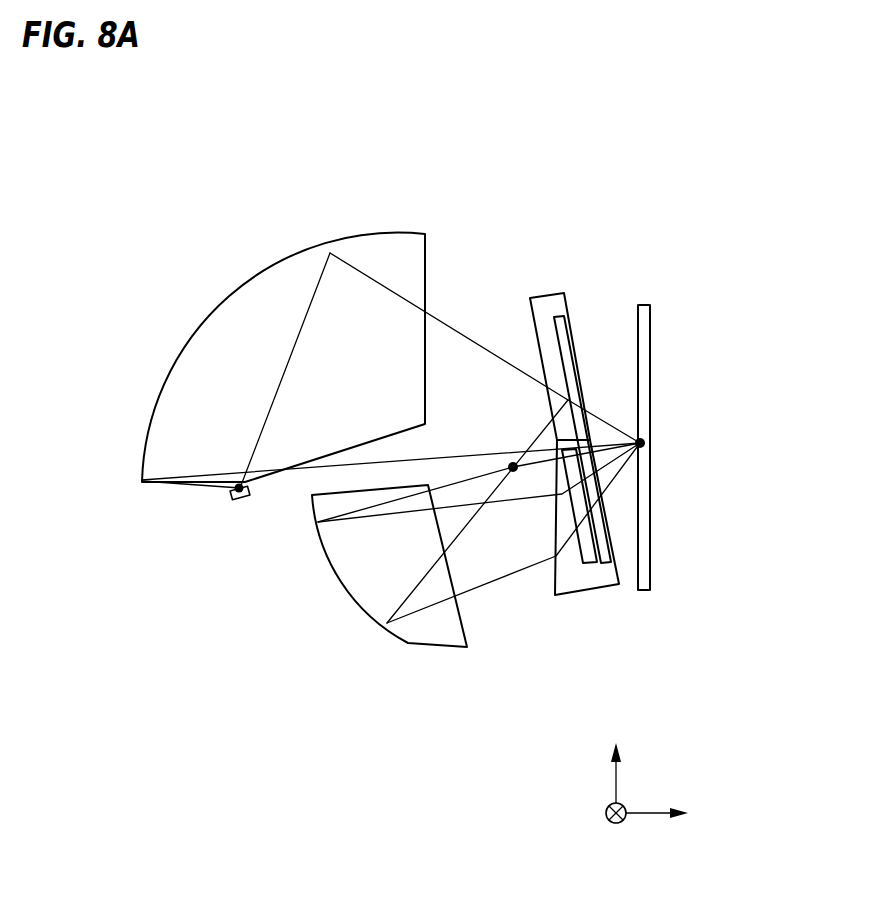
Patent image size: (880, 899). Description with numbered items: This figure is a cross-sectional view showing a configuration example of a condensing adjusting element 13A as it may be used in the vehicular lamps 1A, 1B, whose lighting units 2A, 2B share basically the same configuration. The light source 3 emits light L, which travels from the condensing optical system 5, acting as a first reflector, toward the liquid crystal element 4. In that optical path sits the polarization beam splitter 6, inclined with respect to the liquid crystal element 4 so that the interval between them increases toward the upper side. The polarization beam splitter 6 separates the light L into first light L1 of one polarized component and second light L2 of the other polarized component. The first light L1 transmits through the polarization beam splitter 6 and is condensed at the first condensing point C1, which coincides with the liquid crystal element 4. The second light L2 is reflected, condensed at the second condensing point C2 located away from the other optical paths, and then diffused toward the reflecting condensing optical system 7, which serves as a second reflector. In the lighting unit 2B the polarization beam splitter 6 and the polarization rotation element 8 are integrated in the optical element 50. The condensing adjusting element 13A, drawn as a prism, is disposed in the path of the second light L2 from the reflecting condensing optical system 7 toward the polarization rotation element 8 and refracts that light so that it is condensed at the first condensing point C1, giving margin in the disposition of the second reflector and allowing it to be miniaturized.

The vehicular lamp 1A is at (232, 132).
The vehicular lamp 1B is at (430, 475).
The lighting unit 2A is at (484, 180).
The lighting unit 2B is at (430, 475).
The light source 3 is at (238, 497).
The liquid crystal element 4 is at (645, 303).
The condensing optical system 5 is at (242, 298).
The polarization beam splitter 6 is at (565, 350).
The reflecting condensing optical system 7 is at (358, 603).
The polarization rotation element 8 is at (590, 567).
The condensing adjusting element 13A is at (568, 592).
The optical element 50 is at (538, 296).
The light L is at (465, 335).
The first light L1 is at (607, 418).
The second light L2 is at (538, 437).
The first condensing point C1 is at (645, 443).
The second condensing point C2 is at (510, 465).